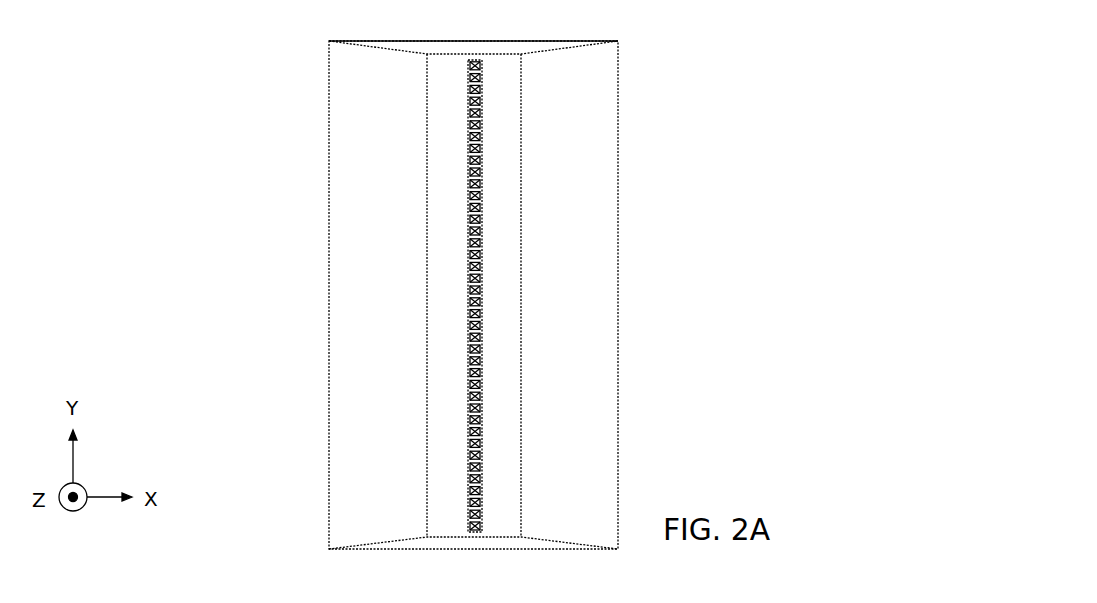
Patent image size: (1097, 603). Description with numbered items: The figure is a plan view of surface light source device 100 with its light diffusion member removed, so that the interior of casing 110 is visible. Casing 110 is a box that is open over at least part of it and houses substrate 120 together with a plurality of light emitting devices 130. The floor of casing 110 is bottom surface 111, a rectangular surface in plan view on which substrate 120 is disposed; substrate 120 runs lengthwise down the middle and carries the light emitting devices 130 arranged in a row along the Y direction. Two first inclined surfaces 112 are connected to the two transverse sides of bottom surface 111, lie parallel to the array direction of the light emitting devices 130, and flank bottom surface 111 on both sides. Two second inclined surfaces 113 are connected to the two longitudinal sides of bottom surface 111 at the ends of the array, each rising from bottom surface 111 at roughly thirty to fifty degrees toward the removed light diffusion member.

The surface light source device 100 is at (718, 72).
The casing 110 is at (617, 215).
The bottom surface 111 is at (513, 394).
The first inclined surface 112 is at (583, 334).
The second inclined surface 113 is at (398, 45).
The substrate 120 is at (468, 366).
The light emitting device 130 is at (468, 322).